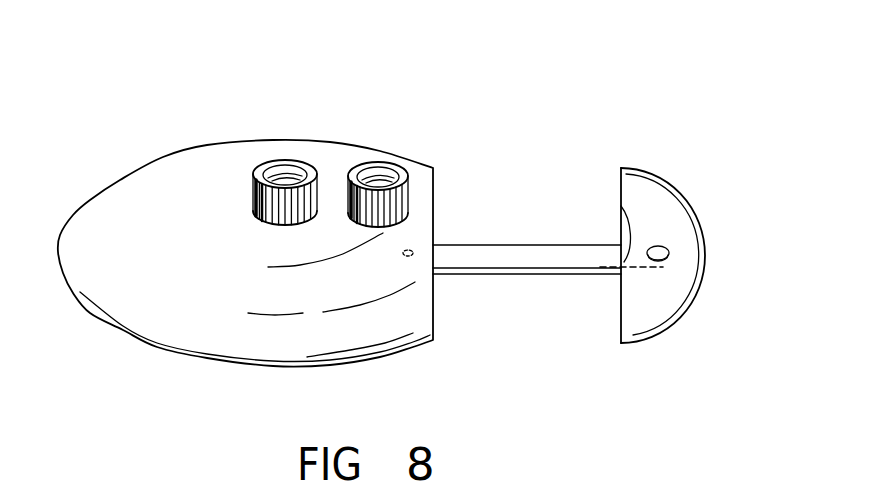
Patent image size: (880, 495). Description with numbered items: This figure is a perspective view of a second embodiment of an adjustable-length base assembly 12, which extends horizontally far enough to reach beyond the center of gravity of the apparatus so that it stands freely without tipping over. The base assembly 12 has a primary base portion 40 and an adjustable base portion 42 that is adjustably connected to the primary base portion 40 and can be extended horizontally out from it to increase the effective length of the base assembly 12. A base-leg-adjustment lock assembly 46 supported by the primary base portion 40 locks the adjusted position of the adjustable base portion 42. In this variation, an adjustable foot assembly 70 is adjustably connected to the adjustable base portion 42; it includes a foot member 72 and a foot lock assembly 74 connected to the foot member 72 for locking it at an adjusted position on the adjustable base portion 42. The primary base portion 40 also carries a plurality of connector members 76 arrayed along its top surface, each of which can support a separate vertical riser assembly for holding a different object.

The base assembly 12 is at (169, 138).
The primary base portion 40 is at (126, 230).
The adjustable base portion 42 is at (513, 253).
The base-leg-adjustment lock assembly 46 is at (413, 247).
The adjustable foot assembly 70 is at (656, 155).
The foot member 72 is at (653, 300).
The foot lock assembly 74 is at (659, 246).
The connector members 76 is at (350, 178).